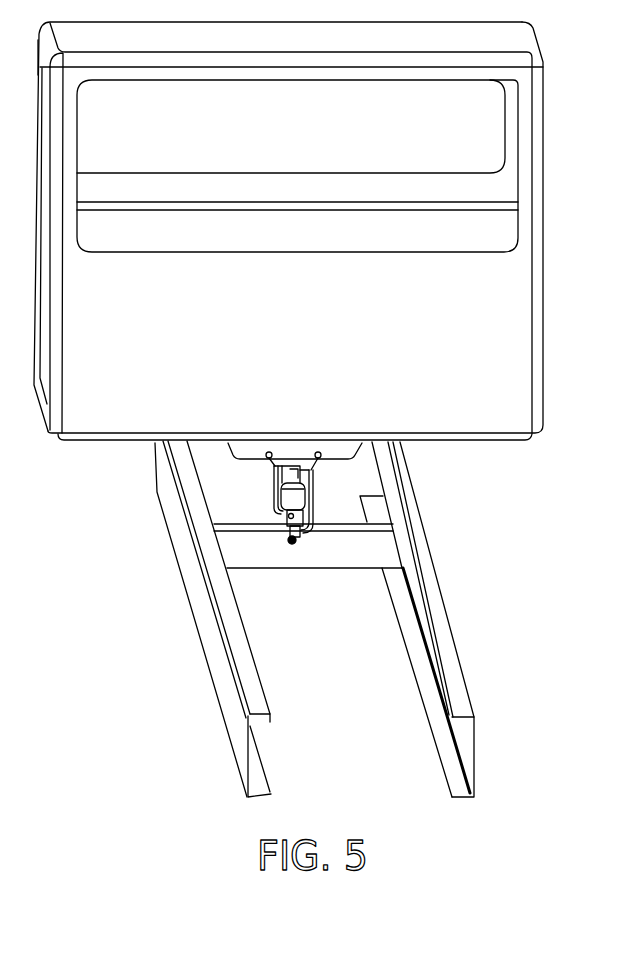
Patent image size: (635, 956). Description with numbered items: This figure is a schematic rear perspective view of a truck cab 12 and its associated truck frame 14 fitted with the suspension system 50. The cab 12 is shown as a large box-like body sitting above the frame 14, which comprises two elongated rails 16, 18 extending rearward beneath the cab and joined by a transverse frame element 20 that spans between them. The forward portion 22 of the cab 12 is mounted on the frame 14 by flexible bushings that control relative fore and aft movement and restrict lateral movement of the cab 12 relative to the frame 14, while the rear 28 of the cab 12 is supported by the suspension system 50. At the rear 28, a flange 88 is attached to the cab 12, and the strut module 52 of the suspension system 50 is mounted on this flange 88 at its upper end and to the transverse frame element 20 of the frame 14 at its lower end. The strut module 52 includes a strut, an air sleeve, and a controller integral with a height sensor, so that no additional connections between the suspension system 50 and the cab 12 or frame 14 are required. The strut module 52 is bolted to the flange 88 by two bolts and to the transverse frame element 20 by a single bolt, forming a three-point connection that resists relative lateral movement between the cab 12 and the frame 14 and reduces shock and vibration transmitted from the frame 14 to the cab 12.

The truck cab 12 is at (514, 292).
The truck frame 14 is at (190, 650).
The rail 16 is at (257, 691).
The rail 18 is at (462, 698).
The transverse frame element 20 is at (357, 553).
The forward portion 22 is at (442, 547).
The rear 28 is at (486, 397).
The suspension system 50 is at (282, 498).
The strut module 52 is at (285, 497).
The flange 88 is at (243, 450).